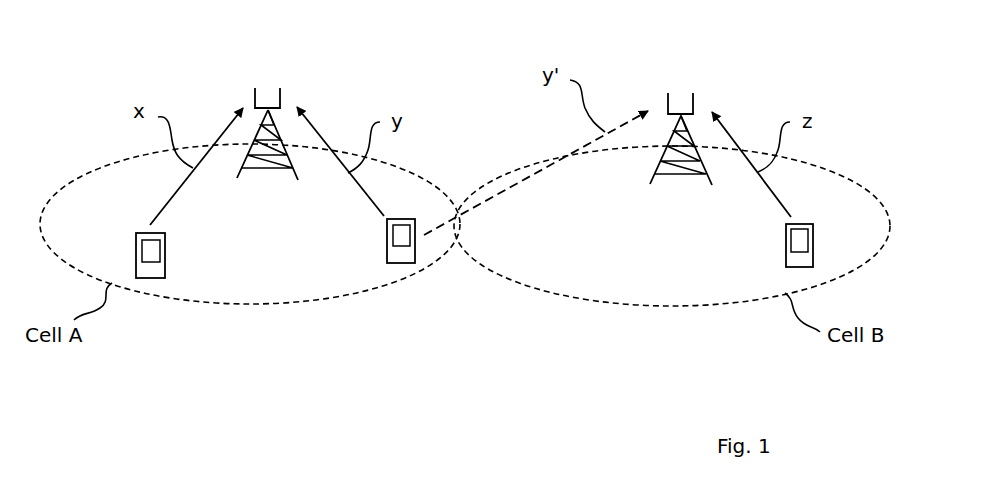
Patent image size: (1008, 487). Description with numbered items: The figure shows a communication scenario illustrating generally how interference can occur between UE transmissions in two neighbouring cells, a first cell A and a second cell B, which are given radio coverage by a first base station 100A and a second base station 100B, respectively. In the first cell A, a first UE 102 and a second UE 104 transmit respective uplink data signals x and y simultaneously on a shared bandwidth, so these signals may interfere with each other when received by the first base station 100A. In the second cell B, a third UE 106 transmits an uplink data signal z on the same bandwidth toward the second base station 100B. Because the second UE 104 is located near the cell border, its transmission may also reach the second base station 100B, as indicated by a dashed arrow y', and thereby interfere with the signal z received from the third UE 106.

The first base station 100A is at (283, 66).
The second base station 100B is at (690, 69).
The first UE 102 is at (136, 246).
The second UE 104 is at (387, 245).
The third UE 106 is at (786, 250).